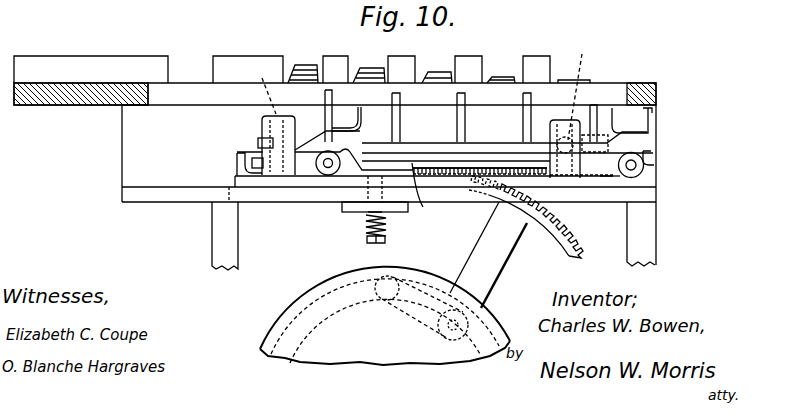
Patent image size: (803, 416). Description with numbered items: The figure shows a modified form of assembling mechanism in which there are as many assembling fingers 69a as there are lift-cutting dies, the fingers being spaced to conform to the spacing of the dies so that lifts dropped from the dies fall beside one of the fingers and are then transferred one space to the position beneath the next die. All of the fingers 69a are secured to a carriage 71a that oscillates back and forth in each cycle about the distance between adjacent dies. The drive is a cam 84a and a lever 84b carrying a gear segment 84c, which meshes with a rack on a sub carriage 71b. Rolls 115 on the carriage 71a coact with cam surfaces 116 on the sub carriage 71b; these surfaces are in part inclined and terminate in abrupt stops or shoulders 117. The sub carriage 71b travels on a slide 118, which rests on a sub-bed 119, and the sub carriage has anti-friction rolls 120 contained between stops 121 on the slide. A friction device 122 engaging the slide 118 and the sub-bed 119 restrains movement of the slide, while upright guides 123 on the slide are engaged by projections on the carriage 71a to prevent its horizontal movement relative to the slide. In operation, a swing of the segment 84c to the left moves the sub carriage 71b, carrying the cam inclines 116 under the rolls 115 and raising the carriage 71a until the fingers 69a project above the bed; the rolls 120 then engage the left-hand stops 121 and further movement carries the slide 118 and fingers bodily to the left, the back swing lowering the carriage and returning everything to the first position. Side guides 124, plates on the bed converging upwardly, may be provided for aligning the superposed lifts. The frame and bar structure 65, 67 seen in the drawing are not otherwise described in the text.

The frame 65 is at (653, 85).
The bar 67 is at (590, 90).
The side guides 124 is at (220, 55).
The upright guides 123 is at (403, 90).
The carriage 71a is at (432, 134).
The assembling fingers 69a is at (524, 121).
The slide 118 is at (340, 178).
The sub-bed 119 is at (283, 198).
The rolls 115 is at (262, 138).
The cam surfaces 116 is at (323, 132).
The stops or shoulders 117 is at (683, 103).
The anti-friction rolls 120 is at (331, 152).
The stops 121 is at (236, 155).
The friction device 122 is at (364, 227).
The sub carriage 71b is at (422, 196).
The cam 84a is at (328, 293).
The lever 84b is at (479, 255).
The gear segment 84c is at (573, 208).